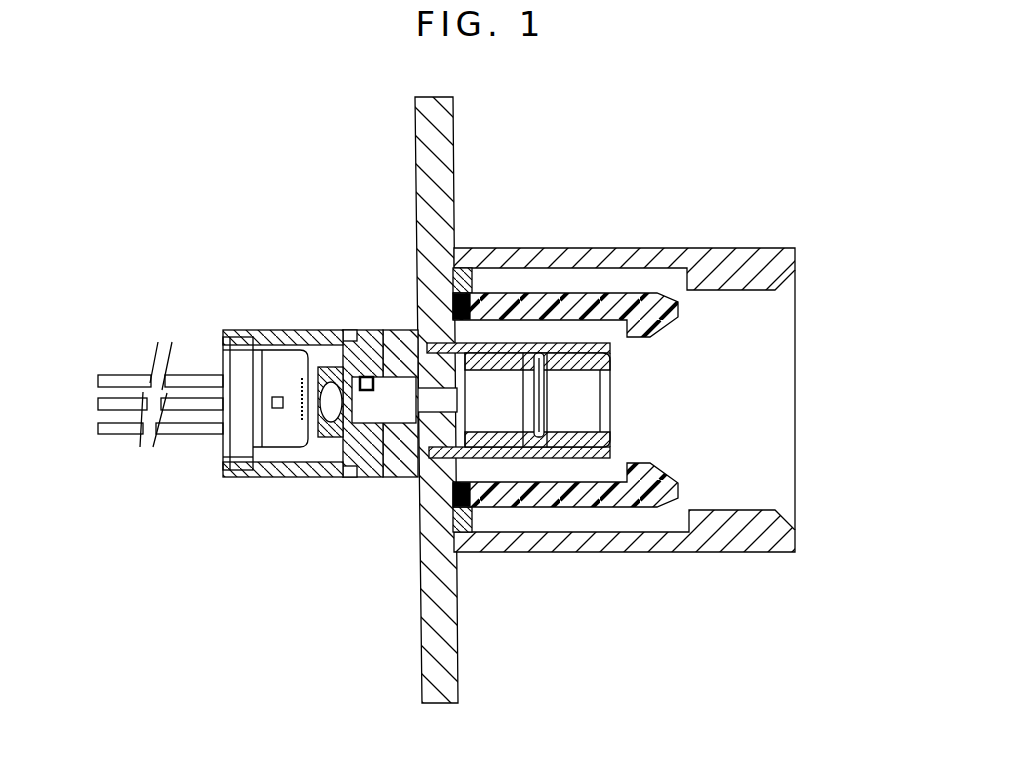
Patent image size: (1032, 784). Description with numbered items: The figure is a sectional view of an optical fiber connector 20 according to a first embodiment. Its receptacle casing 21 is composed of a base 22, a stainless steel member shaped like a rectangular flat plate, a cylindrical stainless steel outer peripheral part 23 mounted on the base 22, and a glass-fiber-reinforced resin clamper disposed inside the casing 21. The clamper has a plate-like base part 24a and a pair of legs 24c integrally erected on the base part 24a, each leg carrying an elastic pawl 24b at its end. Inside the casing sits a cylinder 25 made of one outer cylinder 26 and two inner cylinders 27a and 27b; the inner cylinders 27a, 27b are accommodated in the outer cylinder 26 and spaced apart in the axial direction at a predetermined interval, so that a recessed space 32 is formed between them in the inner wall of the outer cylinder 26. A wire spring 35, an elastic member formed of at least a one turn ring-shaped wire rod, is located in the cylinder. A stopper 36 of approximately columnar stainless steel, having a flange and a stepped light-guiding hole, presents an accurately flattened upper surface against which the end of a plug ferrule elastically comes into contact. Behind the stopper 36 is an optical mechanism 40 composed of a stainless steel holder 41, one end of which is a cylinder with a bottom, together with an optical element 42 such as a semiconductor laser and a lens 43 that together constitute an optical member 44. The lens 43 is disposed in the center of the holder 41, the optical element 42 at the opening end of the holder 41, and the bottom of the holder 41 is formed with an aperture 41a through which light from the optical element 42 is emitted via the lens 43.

The optical fiber connector 20 is at (624, 330).
The receptacle casing 21 is at (652, 250).
The base 22 is at (432, 118).
The outer peripheral part 23 is at (700, 552).
The base part 24a is at (455, 500).
The elastic pawl 24b is at (667, 309).
The legs 24c is at (522, 305).
The cylinder 25 is at (640, 360).
The outer cylinder 26 is at (584, 340).
The inner cylinder 27a is at (571, 345).
The inner cylinder 27b is at (484, 355).
The recessed space 32 is at (529, 455).
The wire spring 35 is at (547, 392).
The stopper 36 is at (388, 478).
The optical mechanism 40 is at (273, 478).
The holder 41 is at (334, 478).
The aperture 41a is at (369, 380).
The optical element 42 is at (270, 375).
The lens 43 is at (327, 372).
The optical member 44 is at (220, 341).